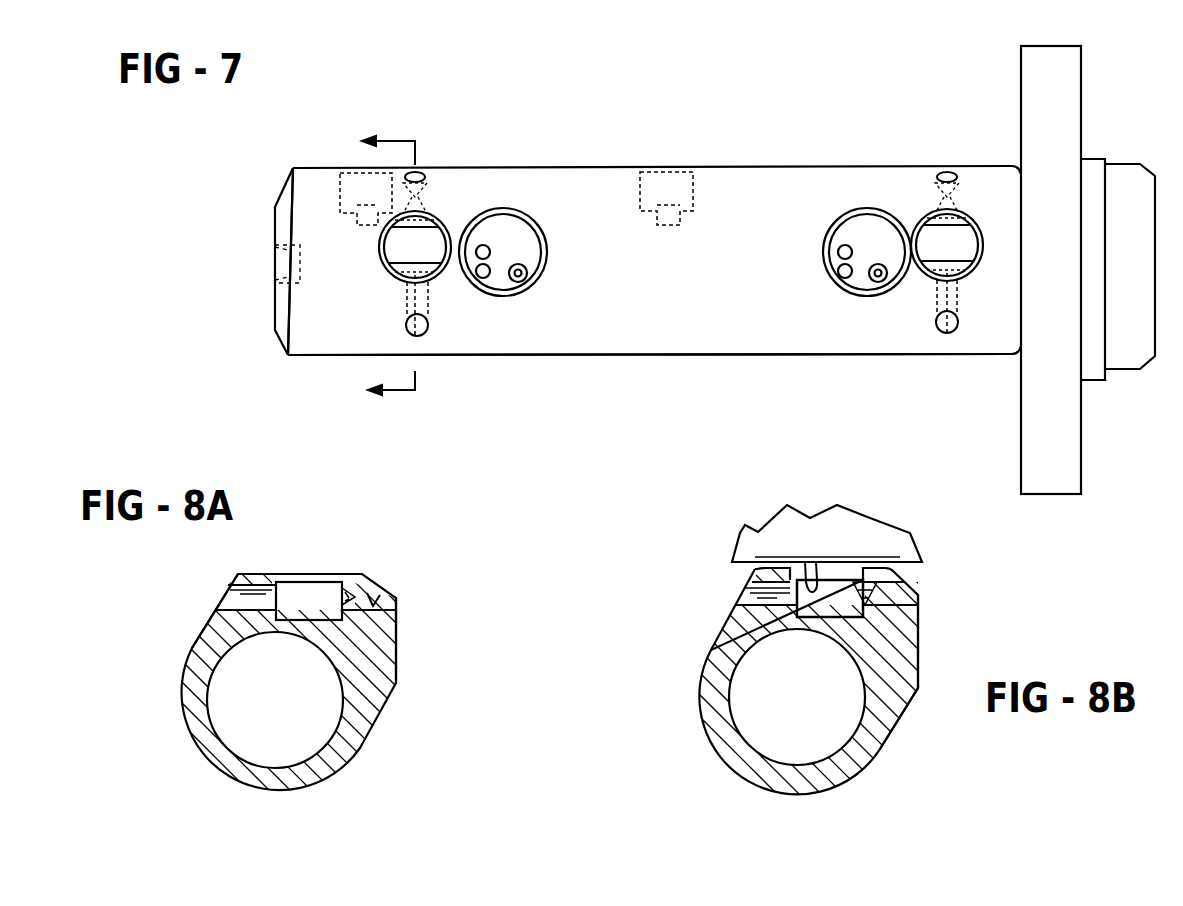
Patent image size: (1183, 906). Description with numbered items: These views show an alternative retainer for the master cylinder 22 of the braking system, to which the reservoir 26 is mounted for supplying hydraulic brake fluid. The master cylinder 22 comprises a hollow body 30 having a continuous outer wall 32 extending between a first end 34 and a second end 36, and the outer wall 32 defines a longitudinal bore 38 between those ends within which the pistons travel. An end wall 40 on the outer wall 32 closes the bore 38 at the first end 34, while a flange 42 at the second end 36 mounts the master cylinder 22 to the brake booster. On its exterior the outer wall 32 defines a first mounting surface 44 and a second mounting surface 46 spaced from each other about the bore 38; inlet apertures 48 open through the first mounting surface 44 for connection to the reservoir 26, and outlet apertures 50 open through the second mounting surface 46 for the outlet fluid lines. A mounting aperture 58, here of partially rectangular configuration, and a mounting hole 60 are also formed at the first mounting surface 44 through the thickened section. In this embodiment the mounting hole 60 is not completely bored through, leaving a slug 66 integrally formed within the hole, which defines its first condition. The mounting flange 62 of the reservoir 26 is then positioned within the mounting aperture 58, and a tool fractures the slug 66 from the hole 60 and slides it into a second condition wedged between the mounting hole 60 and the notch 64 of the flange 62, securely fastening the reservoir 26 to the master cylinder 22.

In FIG. 7, the master cylinder 22 is at (781, 128).
In FIG. 8A, the master cylinder 22 is at (412, 721).
In FIG. 8B, the master cylinder 22 is at (965, 629).
In FIG. 8B, the reservoir 26 is at (872, 533).
In FIG. 7, the hollow body 30 is at (667, 322).
In FIG. 8A, the hollow body 30 is at (323, 788).
In FIG. 8B, the hollow body 30 is at (700, 682).
In FIG. 7, the outer wall 32 is at (807, 355).
In FIG. 8A, the outer wall 32 is at (203, 655).
In FIG. 8B, the outer wall 32 is at (903, 663).
In FIG. 7, the first end 34 is at (292, 172).
In FIG. 7, the second end 36 is at (1102, 383).
In FIG. 8A, the longitudinal bore 38 is at (256, 764).
In FIG. 8B, the longitudinal bore 38 is at (752, 737).
In FIG. 7, the end wall 40 is at (278, 325).
In FIG. 7, the flange 42 is at (1058, 478).
In FIG. 8A, the first mounting surface 44 is at (262, 572).
In FIG. 8A, the second mounting surface 46 is at (396, 650).
In FIG. 8B, the second mounting surface 46 is at (918, 627).
In FIG. 7, the inlet aperture 48 is at (515, 230).
In FIG. 7, the outlet aperture 50 is at (350, 172).
In FIG. 7, the mounting aperture 58 is at (388, 262).
In FIG. 8A, the mounting aperture 58 is at (278, 580).
In FIG. 7, the mounting hole 60 is at (417, 330).
In FIG. 8A, the mounting hole 60 is at (382, 597).
In FIG. 8B, the mounting hole 60 is at (758, 599).
In FIG. 8B, the mounting flange 62 is at (820, 572).
In FIG. 8B, the notch 64 is at (812, 590).
In FIG. 8A, the slug 66 is at (380, 590).
In FIG. 8B, the slug 66 is at (872, 596).